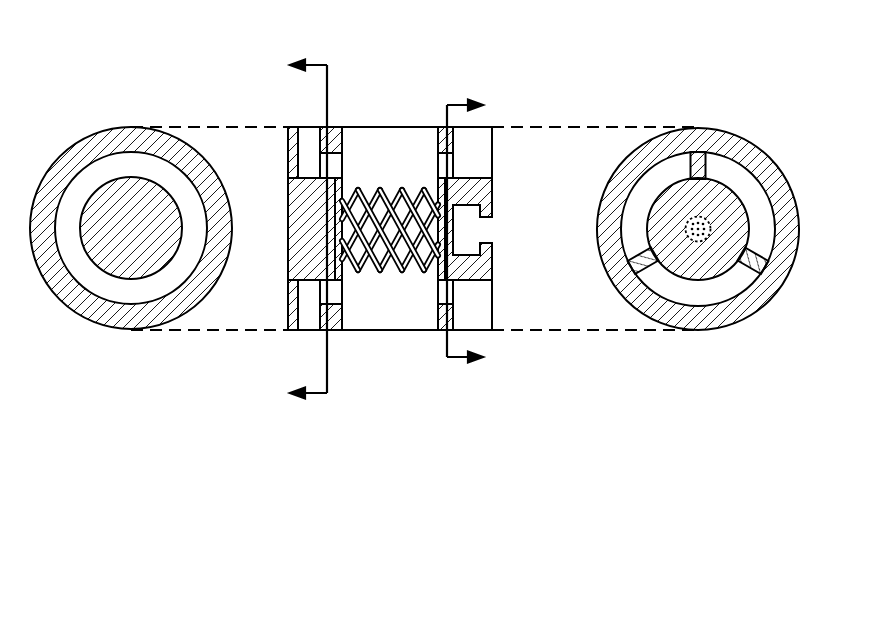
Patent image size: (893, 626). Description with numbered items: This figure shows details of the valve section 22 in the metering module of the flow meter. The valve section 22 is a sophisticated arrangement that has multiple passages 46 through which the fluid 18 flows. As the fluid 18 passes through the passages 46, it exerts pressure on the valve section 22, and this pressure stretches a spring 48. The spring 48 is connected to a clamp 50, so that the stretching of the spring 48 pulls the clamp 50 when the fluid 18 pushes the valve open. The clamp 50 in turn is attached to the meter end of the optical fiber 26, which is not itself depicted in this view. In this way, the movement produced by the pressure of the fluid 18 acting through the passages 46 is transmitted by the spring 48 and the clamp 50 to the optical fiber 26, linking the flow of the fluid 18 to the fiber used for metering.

The passages 46 is at (750, 197).
The fluid 18 is at (335, 225).
The spring 48 is at (376, 262).
The clamp 50 is at (465, 270).
The valve section 22 is at (414, 364).
The optical fiber 26 is at (571, 367).